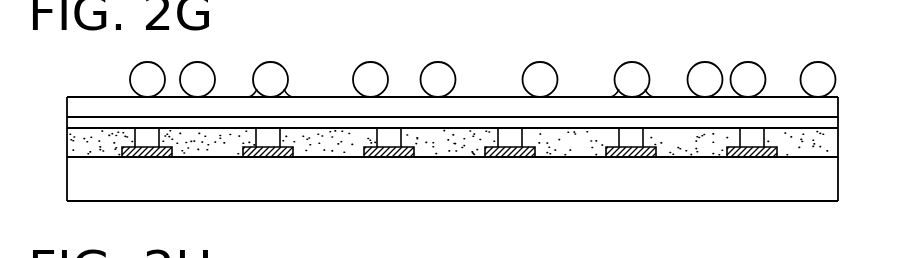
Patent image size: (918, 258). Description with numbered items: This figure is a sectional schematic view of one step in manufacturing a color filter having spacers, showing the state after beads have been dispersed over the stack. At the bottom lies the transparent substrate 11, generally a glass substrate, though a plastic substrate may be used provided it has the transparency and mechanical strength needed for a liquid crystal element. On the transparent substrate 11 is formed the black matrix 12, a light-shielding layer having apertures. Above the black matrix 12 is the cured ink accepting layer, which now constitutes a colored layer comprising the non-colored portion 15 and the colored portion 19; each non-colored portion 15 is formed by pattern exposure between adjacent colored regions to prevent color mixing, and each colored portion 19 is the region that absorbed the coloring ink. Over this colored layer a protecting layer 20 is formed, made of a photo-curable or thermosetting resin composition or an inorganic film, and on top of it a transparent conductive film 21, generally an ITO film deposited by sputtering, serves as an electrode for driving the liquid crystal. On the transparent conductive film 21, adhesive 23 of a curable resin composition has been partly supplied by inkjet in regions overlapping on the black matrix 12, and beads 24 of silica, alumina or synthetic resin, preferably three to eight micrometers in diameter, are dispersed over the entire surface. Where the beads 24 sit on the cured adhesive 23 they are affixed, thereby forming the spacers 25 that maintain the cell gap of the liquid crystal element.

In FIG. 2G, the transparent substrate 11 is at (587, 188).
In FIG. 2G, the black matrix 12 is at (515, 157).
In FIG. 2G, the non-colored portion 15 is at (390, 138).
In FIG. 2G, the colored portion 19 is at (442, 152).
In FIG. 2G, the protecting layer 20 is at (572, 120).
In FIG. 2G, the transparent conductive film 21 is at (477, 105).
In FIG. 2G, the adhesive 23 is at (288, 95).
In FIG. 2G, the beads 24 is at (267, 75).
In FIG. 2H, the spacers 25 is at (278, 242).